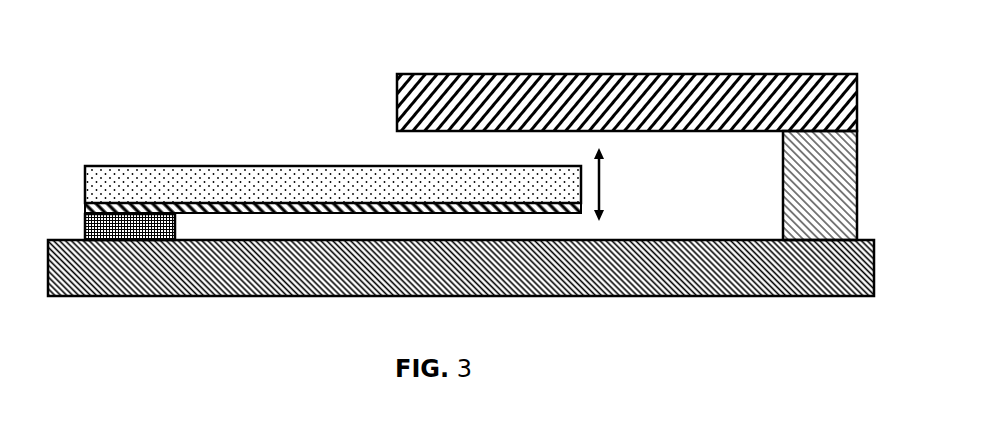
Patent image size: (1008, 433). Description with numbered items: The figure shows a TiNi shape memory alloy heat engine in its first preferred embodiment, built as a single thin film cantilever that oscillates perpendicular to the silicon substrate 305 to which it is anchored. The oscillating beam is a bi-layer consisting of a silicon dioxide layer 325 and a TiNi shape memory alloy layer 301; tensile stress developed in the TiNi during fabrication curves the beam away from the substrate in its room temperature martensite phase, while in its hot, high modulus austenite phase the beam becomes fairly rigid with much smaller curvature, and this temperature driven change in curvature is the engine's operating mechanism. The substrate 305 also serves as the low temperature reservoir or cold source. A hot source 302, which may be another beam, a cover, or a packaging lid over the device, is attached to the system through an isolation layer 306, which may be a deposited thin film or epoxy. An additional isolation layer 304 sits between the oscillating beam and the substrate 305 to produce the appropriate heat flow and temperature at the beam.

The TiNi shape memory alloy layer 301 is at (452, 166).
The hot source 302 is at (507, 74).
The isolation layer 304 is at (85, 214).
The substrate 305 is at (615, 296).
The isolation layer 306 is at (783, 168).
The silicon dioxide layer 325 is at (333, 207).